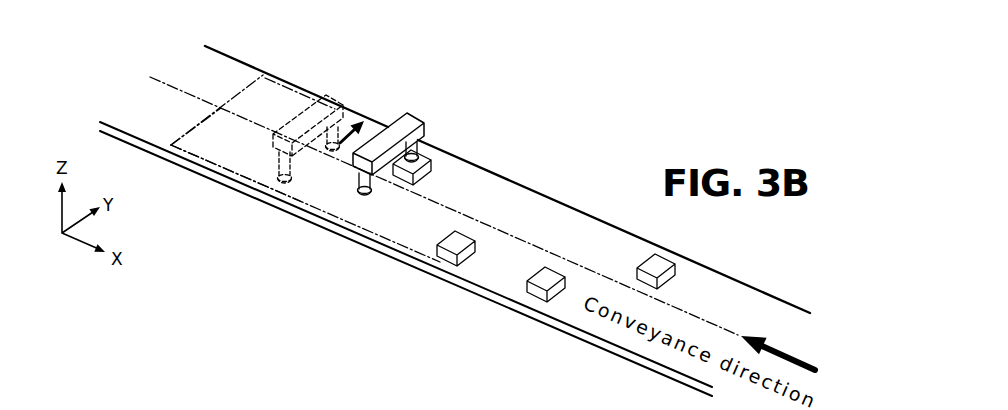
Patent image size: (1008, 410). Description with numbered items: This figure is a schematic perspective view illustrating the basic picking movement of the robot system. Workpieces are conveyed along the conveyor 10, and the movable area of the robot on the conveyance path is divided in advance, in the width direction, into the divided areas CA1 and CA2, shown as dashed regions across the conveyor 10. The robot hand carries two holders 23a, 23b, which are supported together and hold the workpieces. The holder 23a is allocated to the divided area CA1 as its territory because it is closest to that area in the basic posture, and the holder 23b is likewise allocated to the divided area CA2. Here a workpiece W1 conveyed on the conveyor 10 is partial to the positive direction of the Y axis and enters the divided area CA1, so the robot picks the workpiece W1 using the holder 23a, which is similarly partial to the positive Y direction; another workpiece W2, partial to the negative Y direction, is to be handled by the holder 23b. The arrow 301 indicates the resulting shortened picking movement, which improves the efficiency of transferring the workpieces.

The conveyor 10 is at (274, 38).
The divided area CA1 is at (286, 100).
The divided area CA2 is at (239, 152).
The arrow 301 is at (341, 150).
The holder 23a is at (418, 142).
The holder 23b is at (373, 180).
The workpiece W1 is at (432, 166).
The workpiece W2 is at (440, 232).